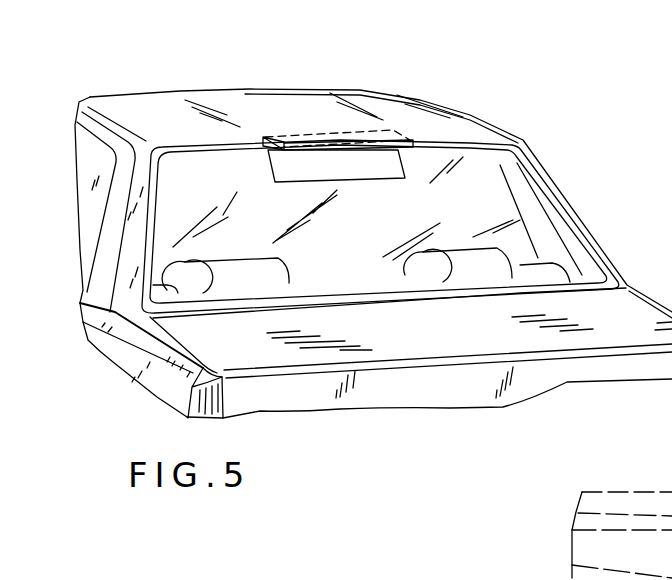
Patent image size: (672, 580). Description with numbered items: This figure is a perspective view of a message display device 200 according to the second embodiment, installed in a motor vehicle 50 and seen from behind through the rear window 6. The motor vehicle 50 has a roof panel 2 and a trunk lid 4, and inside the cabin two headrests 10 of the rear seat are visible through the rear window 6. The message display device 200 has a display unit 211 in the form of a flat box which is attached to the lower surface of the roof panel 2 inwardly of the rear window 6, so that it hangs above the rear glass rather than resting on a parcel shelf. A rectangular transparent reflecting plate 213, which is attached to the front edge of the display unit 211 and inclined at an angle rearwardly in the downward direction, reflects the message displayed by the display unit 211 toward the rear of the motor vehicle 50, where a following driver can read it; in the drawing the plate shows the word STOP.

The message display device 200 is at (483, 107).
The roof panel 2 is at (212, 153).
The trunk lid 4 is at (453, 343).
The rear window 6 is at (490, 183).
The headrests 10 is at (243, 275).
The motor vehicle 50 is at (454, 142).
The display unit 211 is at (351, 140).
The transparent reflecting plate 213 is at (418, 183).